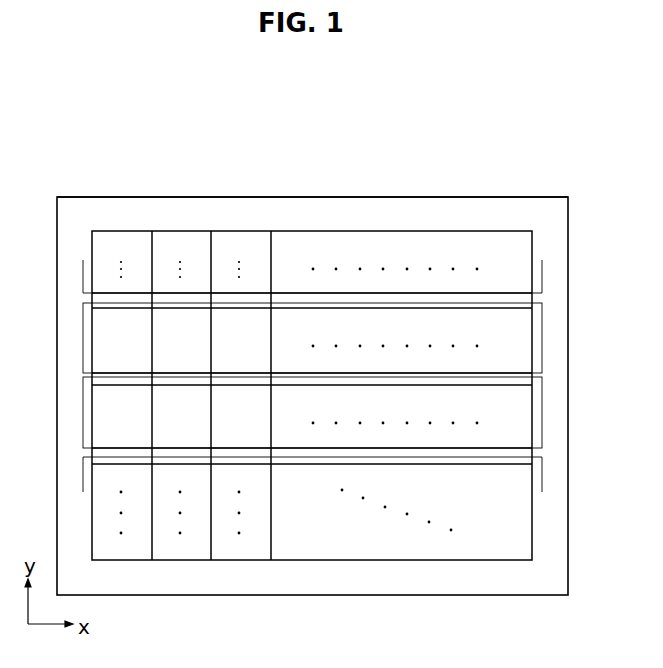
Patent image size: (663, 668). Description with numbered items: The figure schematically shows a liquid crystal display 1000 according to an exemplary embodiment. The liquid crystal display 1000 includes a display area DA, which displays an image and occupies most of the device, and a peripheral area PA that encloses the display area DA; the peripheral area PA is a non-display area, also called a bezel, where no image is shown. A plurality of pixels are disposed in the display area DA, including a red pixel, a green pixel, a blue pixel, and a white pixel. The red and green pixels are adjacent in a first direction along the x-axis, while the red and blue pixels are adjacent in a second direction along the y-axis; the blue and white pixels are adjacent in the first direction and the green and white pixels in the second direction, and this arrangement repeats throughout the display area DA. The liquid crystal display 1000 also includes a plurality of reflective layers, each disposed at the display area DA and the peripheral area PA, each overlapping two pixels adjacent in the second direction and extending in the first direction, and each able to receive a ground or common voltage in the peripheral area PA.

The liquid crystal display 1000 is at (341, 143).
The display area DA is at (477, 231).
The peripheral area PA is at (399, 206).